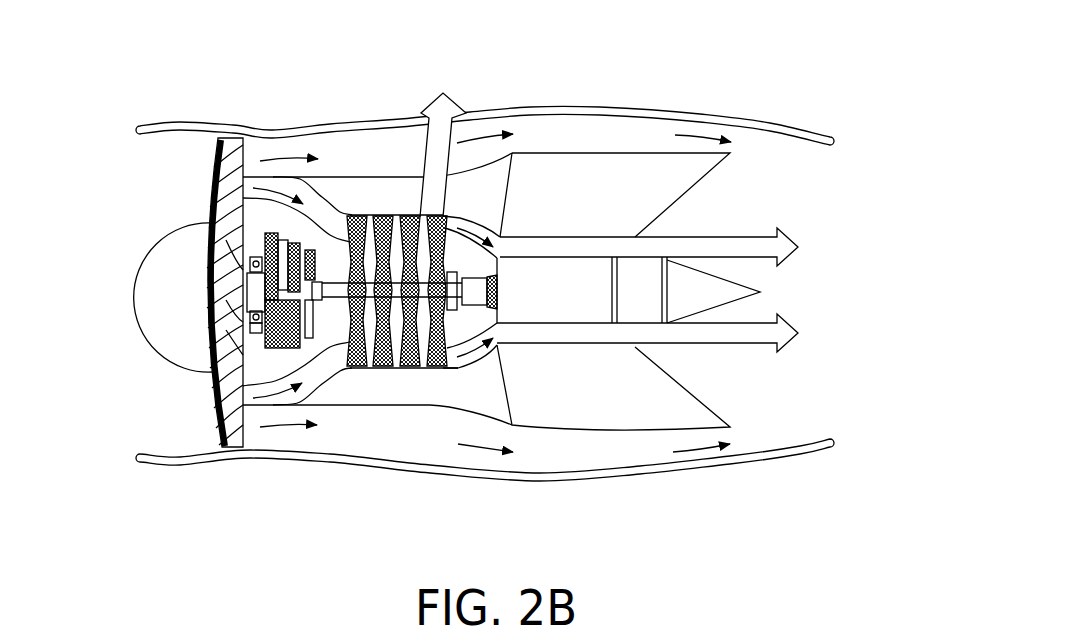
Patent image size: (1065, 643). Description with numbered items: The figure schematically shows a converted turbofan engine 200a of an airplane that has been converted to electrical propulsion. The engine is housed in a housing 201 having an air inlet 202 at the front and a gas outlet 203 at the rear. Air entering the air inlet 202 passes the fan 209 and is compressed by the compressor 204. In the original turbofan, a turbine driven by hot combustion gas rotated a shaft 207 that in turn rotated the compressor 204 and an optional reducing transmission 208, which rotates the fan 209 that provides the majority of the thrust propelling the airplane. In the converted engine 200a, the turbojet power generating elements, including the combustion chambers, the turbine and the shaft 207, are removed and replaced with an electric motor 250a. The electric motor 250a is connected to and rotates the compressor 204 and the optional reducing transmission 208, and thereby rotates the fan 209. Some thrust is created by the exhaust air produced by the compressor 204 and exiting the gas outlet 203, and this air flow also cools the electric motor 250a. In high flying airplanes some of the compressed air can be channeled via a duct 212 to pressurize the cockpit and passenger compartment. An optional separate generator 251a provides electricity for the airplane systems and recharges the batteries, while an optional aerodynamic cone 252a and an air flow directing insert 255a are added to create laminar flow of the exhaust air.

The converted turbofan engine 200a is at (817, 82).
The housing 201 is at (653, 113).
The air inlet 202 is at (157, 455).
The gas outlet 203 is at (800, 443).
The compressor 204 is at (460, 217).
The shaft 207 is at (473, 307).
The reducing transmission 208 is at (243, 324).
The fan 209 is at (175, 193).
The duct 212 is at (423, 143).
The electric motor 250a is at (592, 273).
The generator 251a is at (628, 305).
The aerodynamic cone 252a is at (713, 287).
The air flow directing insert 255a is at (643, 423).